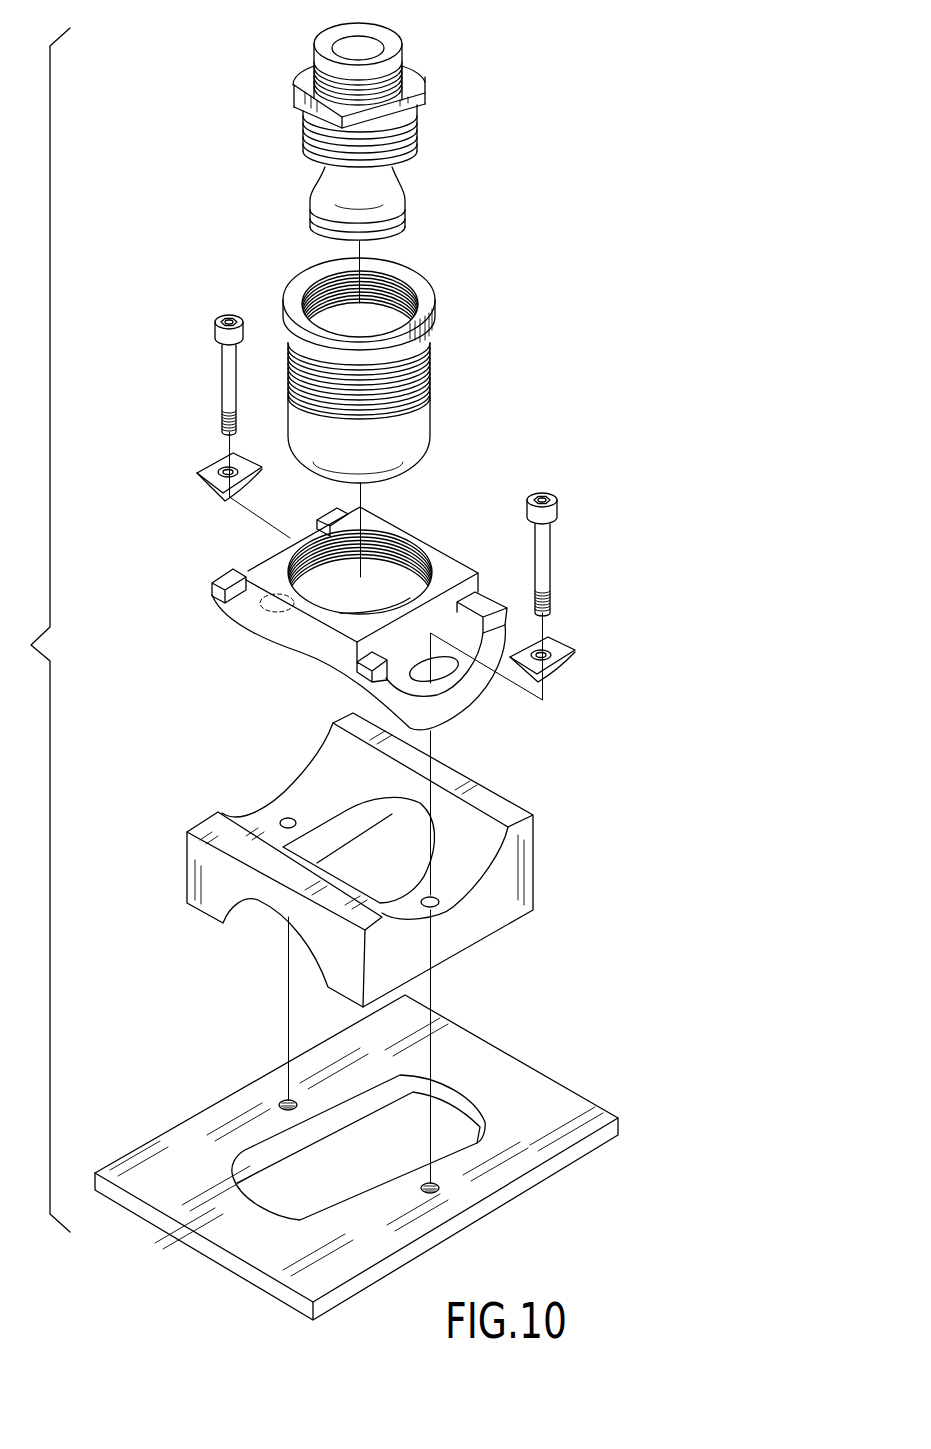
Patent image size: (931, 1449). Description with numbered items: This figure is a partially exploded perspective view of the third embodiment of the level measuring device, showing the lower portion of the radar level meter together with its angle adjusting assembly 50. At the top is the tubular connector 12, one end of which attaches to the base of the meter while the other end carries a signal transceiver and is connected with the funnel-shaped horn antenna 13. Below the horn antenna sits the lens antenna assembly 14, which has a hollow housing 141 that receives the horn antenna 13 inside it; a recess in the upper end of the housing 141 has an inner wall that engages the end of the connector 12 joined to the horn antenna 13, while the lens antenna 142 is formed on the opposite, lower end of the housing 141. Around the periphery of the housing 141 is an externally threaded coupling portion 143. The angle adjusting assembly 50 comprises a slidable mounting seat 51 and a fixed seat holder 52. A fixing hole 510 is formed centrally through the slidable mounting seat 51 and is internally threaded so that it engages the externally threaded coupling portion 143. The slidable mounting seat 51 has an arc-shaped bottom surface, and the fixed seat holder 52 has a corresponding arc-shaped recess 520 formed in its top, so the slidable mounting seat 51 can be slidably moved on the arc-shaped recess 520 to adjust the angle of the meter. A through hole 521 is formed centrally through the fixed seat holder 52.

The connector 12 is at (413, 107).
The horn antenna 13 is at (388, 197).
The lens antenna assembly 14 is at (283, 270).
The housing 141 is at (425, 300).
The lens antenna 142 is at (407, 440).
The coupling portion 143 is at (417, 367).
The angle adjusting assembly 50 is at (655, 665).
The slidable mounting seat 51 is at (333, 618).
The fixing hole 510 is at (410, 568).
The fixed seat holder 52 is at (355, 860).
The arc-shaped recess 520 is at (473, 862).
The through hole 521 is at (337, 830).